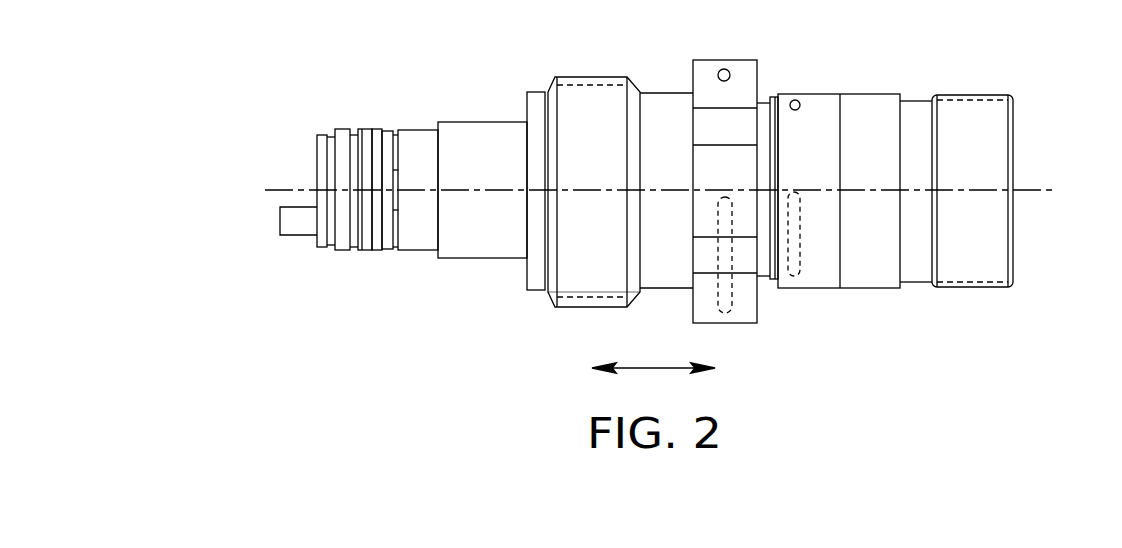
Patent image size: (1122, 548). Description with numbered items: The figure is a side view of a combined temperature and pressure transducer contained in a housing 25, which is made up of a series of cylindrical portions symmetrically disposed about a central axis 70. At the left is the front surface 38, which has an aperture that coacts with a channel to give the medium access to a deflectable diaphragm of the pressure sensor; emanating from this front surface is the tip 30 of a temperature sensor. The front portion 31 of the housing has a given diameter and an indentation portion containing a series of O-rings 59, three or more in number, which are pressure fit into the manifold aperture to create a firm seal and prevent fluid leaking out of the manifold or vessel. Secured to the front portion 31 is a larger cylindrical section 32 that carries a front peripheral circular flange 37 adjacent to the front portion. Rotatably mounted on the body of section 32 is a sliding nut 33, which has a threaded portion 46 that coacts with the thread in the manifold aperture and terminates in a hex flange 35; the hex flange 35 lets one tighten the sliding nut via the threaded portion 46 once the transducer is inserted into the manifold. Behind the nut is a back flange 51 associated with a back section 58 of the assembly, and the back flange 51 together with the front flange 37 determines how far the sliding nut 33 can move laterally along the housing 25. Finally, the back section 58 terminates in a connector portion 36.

The housing 25 is at (1068, 90).
The tip of temperature sensor 30 is at (300, 235).
The front portion 31 is at (363, 252).
The cylindrical section 32 is at (480, 260).
The sliding nut 33 is at (600, 307).
The hex flange 35 is at (742, 315).
The connector portion 36 is at (977, 288).
The front flange 37 is at (543, 90).
The front surface 38 is at (313, 158).
The threaded portion 46 is at (592, 137).
The back flange 51 is at (774, 100).
The back section 58 is at (913, 98).
The O-rings 59 is at (372, 128).
The central axis 70 is at (280, 192).